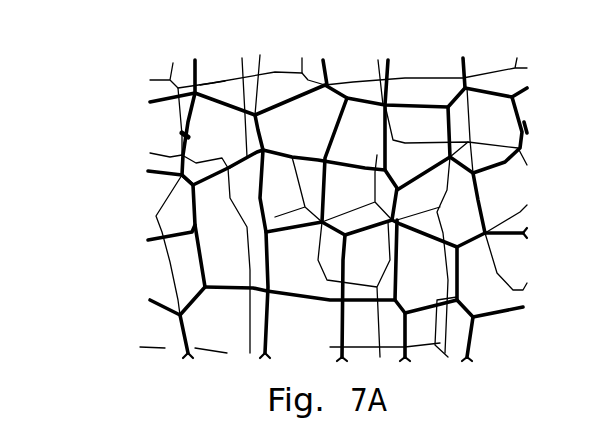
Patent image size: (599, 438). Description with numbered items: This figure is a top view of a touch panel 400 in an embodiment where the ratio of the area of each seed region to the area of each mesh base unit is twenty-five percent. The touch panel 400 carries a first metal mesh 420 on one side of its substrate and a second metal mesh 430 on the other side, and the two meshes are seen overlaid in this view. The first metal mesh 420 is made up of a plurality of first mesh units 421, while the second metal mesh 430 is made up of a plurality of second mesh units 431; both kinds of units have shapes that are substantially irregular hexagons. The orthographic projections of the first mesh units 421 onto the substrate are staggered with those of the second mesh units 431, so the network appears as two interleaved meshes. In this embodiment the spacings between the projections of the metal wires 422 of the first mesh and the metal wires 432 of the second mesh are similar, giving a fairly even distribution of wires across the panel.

The touch panel 400 is at (80, 40).
The first metal mesh 420 is at (177, 108).
The first mesh units 421 is at (181, 136).
The metal wires 422 is at (188, 187).
The second metal mesh 430 is at (226, 80).
The second mesh units 431 is at (209, 79).
The metal wires 432 is at (175, 157).